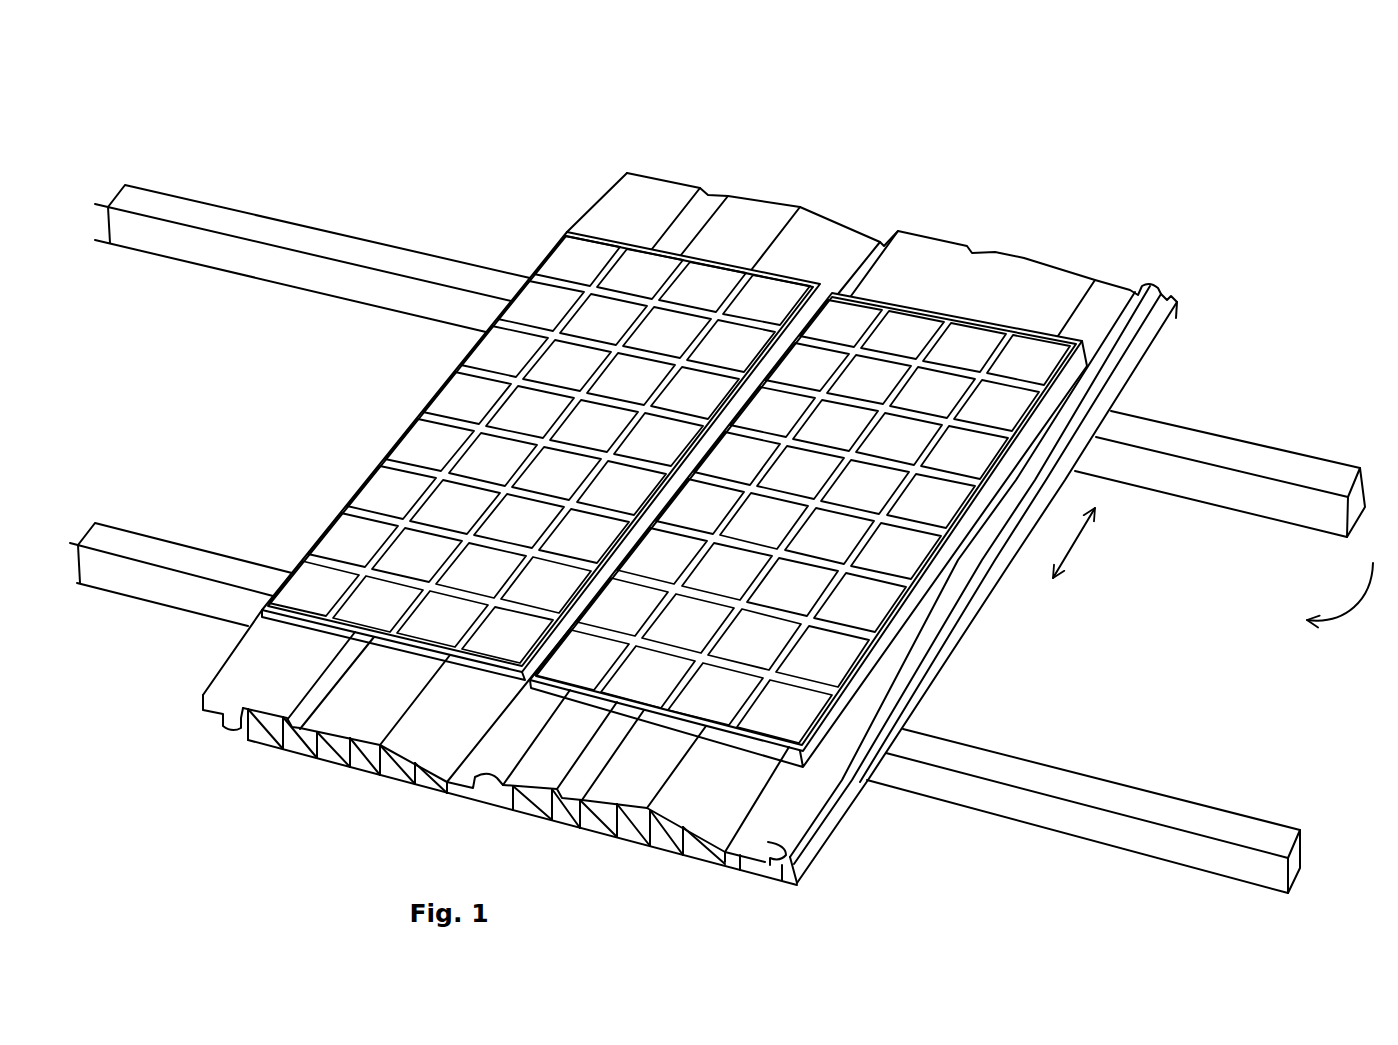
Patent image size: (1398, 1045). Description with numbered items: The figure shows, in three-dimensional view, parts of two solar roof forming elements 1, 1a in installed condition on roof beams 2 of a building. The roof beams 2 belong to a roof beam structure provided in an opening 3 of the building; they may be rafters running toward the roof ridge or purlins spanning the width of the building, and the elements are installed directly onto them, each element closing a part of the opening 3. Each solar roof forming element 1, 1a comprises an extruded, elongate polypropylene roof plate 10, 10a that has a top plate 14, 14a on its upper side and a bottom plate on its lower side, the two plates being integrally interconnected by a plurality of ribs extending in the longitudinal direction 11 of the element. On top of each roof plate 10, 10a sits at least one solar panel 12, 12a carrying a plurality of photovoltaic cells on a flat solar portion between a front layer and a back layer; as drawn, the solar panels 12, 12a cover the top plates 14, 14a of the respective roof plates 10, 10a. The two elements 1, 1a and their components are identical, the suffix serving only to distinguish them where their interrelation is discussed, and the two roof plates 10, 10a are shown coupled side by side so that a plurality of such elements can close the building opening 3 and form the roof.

The solar roof forming element 1 is at (1208, 248).
The solar roof forming element 1a is at (615, 147).
The roof beams 2 is at (1222, 468).
The opening 3 is at (1345, 578).
The roof plate 10 is at (1070, 232).
The roof plate 10a is at (745, 147).
The longitudinal direction 11 is at (1075, 538).
The solar panel 12 is at (897, 618).
The solar panel 12a is at (313, 464).
The top plate 14 is at (625, 783).
The top plate 14a is at (353, 708).